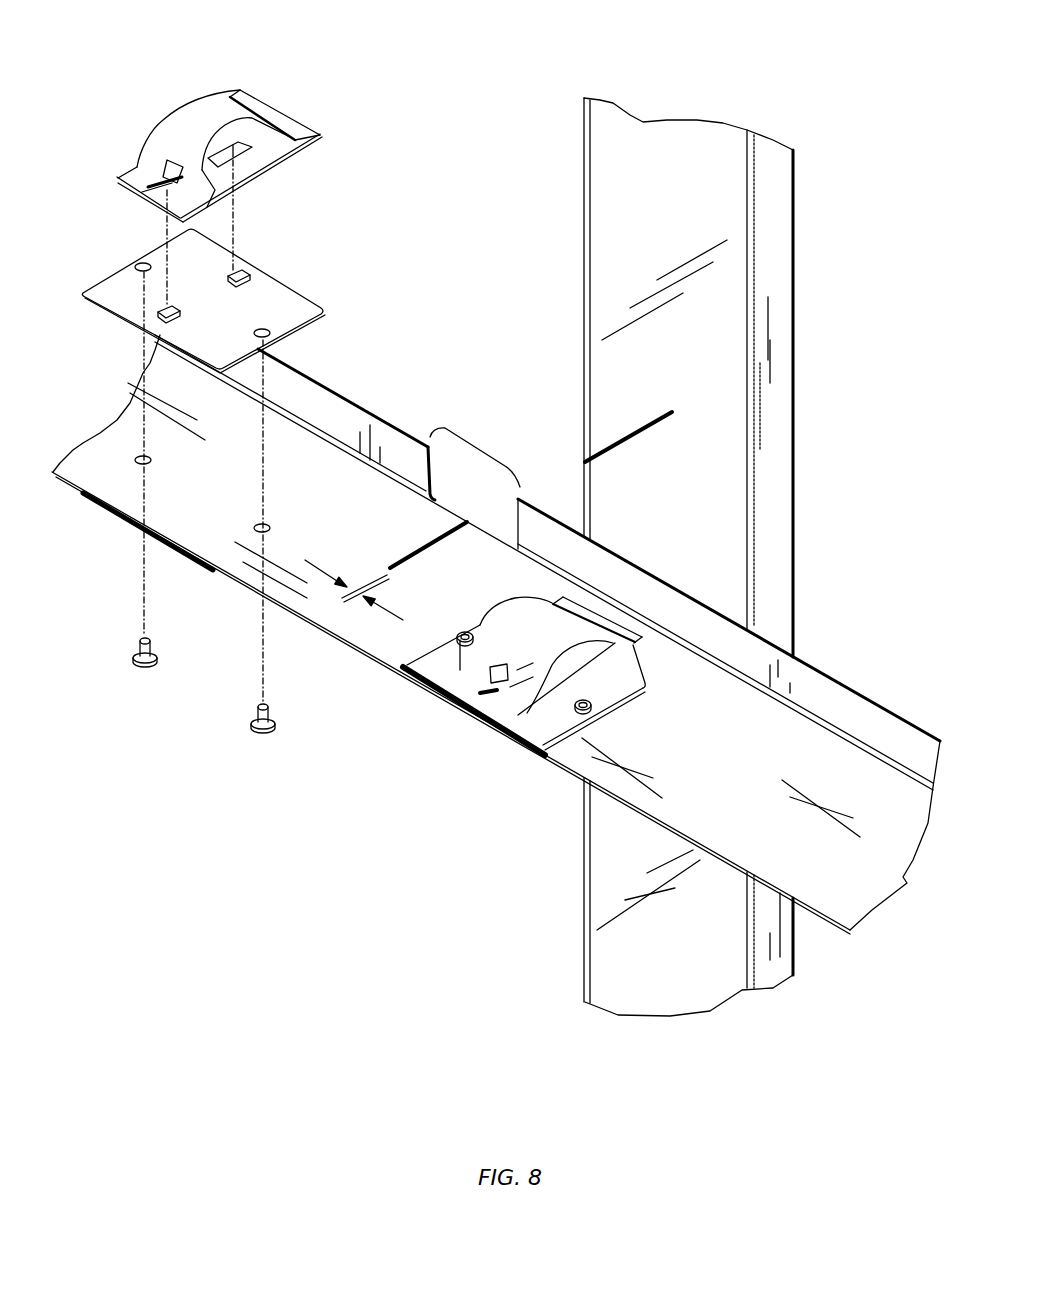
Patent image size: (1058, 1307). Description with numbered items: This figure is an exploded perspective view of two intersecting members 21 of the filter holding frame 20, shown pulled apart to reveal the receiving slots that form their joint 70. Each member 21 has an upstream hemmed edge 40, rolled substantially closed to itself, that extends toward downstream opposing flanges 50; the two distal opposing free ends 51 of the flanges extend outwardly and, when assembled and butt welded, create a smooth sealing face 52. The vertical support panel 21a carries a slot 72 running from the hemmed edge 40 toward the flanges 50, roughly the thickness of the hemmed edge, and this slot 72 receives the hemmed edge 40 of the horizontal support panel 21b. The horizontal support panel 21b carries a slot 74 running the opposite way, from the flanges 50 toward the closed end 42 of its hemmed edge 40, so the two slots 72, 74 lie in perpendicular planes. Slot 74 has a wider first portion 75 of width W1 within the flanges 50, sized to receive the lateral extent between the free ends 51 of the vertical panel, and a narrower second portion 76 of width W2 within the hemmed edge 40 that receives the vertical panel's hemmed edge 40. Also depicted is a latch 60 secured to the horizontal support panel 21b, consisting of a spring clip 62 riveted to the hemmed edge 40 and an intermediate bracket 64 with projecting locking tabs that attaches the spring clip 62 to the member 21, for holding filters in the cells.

The filter holding frame 20 is at (370, 975).
The intersecting members 21 is at (812, 432).
The vertical support panel 21a is at (623, 135).
The horizontal support panel 21b is at (117, 440).
The upstream hemmed edge 40 is at (610, 203).
The closed end 42 is at (580, 900).
The downstream opposing flanges 50 is at (783, 247).
The distal opposing free ends 51 is at (795, 205).
The sealing face 52 is at (772, 375).
The latch 60 is at (333, 78).
The spring clip 62 is at (118, 178).
The intermediate bracket 64 is at (127, 290).
The joint 70 is at (470, 378).
The slot 72 is at (568, 440).
The slot 74 is at (442, 403).
The first portion 75 is at (517, 523).
The second portion 76 is at (433, 550).
The width W1 is at (475, 450).
The width W2 is at (320, 570).